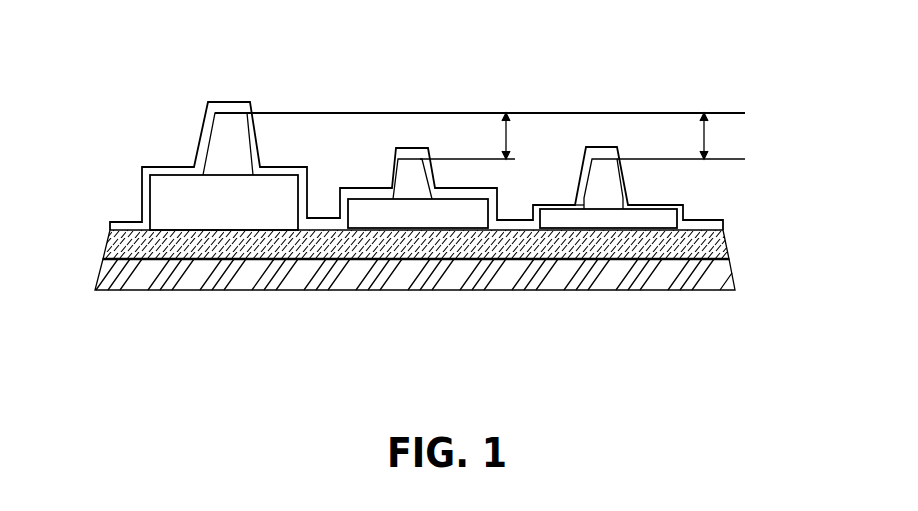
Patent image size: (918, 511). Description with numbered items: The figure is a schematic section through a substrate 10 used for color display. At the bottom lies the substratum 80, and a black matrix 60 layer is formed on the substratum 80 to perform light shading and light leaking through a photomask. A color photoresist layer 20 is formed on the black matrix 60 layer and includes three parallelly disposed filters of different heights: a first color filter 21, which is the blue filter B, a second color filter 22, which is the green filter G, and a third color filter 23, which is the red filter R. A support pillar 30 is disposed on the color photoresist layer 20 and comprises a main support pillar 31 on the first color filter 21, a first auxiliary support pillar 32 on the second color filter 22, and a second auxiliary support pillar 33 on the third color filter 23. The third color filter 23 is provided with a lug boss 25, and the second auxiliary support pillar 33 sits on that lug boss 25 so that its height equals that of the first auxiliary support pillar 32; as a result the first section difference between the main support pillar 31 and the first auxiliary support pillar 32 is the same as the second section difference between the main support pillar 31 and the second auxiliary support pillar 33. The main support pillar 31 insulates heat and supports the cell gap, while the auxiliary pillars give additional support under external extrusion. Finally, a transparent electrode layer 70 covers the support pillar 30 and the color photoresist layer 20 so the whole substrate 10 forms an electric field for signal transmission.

The substrate 10 is at (772, 100).
The color photoresist layer 20 is at (413, 281).
The first color filter 21 is at (173, 192).
The second color filter 22 is at (377, 215).
The third color filter 23 is at (608, 272).
The lug boss 25 is at (612, 208).
The support pillar 30 is at (430, 104).
The main support pillar 31 is at (240, 130).
The first auxiliary support pillar 32 is at (431, 197).
The second auxiliary support pillar 33 is at (620, 130).
The black matrix layer 60 is at (118, 242).
The transparent electrode layer 70 is at (203, 134).
The substratum 80 is at (103, 287).